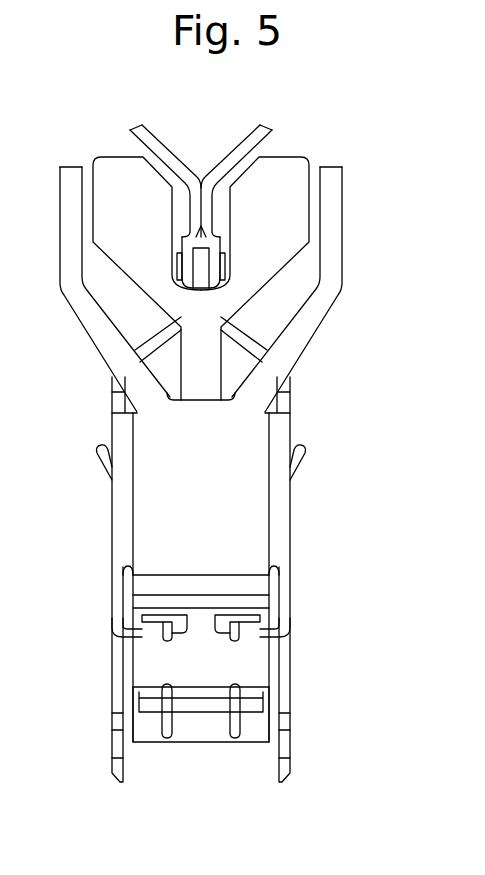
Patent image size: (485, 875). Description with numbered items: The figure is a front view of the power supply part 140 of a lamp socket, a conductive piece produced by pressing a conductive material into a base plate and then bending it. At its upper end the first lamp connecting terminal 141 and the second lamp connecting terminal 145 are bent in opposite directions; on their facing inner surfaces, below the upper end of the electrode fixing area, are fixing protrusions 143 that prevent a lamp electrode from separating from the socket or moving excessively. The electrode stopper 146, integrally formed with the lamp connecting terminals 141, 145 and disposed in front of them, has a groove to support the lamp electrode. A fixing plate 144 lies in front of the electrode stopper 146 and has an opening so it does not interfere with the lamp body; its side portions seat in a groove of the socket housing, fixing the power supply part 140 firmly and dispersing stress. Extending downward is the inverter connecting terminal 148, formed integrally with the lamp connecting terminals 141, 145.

The power supply part 140 is at (308, 513).
The first lamp connecting terminal 141 is at (131, 128).
The fixing protrusions 143 is at (182, 280).
The fixing plate 144 is at (327, 295).
The second lamp connecting terminal 145 is at (271, 128).
The electrode stopper 146 is at (287, 213).
The inverter connecting terminal 148 is at (177, 720).